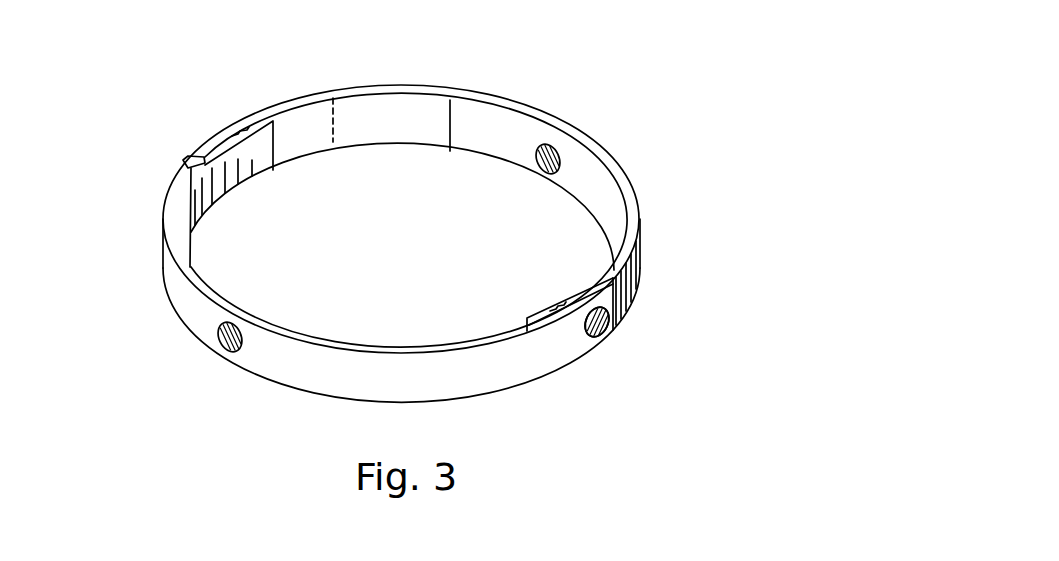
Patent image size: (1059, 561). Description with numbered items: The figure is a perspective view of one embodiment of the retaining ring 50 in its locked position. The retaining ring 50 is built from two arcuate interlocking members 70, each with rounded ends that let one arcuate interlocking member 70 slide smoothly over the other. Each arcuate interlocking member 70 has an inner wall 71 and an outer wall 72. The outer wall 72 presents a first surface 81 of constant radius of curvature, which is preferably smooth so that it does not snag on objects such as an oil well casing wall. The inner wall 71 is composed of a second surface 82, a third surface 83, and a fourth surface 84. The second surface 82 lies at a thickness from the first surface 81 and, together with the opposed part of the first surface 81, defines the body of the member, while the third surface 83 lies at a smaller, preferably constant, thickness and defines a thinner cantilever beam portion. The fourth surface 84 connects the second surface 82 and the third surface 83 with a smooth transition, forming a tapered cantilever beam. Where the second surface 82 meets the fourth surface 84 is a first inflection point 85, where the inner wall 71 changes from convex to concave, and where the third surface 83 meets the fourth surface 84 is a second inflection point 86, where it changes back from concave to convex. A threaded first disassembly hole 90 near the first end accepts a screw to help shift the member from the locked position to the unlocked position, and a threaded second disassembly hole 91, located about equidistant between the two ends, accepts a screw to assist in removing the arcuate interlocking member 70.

The retaining ring 50 is at (650, 79).
The arcuate interlocking member 70 is at (394, 261).
The inner wall 71 is at (491, 157).
The outer wall 72 is at (277, 383).
The first surface 81 is at (553, 343).
The second surface 82 is at (582, 190).
The third surface 83 is at (290, 138).
The fourth surface 84 is at (427, 117).
The first inflection point 85 is at (450, 150).
The second inflection point 86 is at (333, 144).
The first disassembly hole 90 is at (606, 328).
The second disassembly hole 91 is at (556, 146).